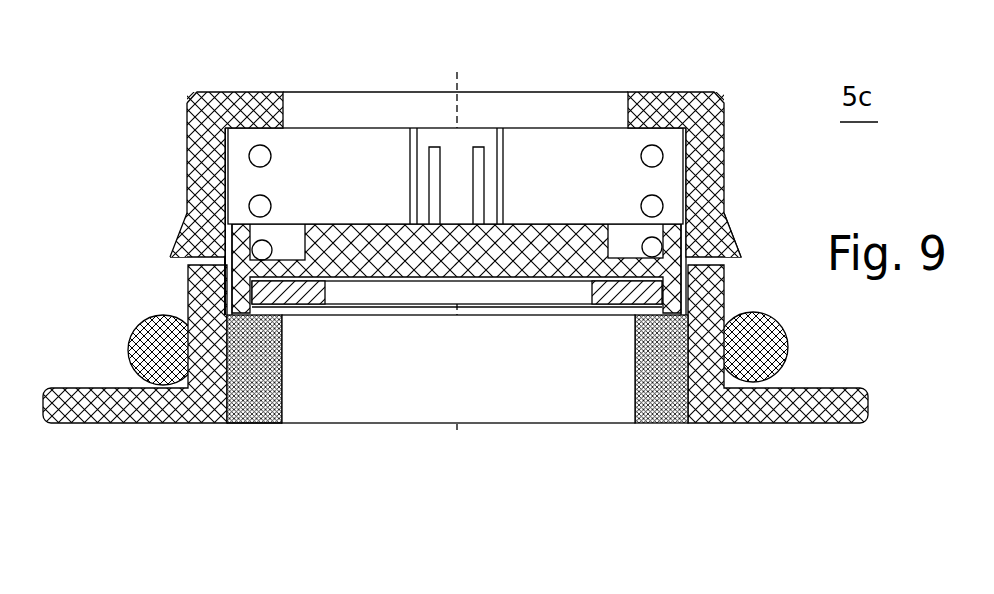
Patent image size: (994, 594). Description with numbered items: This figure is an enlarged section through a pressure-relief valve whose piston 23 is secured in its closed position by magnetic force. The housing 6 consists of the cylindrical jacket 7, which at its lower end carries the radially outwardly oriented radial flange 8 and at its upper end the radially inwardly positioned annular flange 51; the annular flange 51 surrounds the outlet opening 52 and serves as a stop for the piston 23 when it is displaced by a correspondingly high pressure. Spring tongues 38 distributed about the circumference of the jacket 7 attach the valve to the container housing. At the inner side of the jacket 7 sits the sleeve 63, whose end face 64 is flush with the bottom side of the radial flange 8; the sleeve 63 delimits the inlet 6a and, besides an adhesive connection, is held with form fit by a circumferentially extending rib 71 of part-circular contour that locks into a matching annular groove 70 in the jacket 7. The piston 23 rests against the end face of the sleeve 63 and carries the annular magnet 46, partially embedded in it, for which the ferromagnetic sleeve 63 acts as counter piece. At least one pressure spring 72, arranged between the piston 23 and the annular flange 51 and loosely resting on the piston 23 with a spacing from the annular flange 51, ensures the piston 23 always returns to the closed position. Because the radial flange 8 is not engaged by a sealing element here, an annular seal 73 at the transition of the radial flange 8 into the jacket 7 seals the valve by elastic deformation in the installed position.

The housing 6 is at (707, 155).
The inlet 6a is at (408, 402).
The cylindrical jacket 7 is at (207, 170).
The radial flange 8 is at (80, 410).
The piston 23 is at (560, 253).
The spring tongues 38 is at (195, 232).
The magnet 46 is at (302, 292).
The annular flange 51 is at (243, 113).
The outlet opening 52 is at (568, 110).
The sleeve 63 is at (278, 423).
The end face 64 is at (255, 423).
The annular groove 70 is at (227, 386).
The rib 71 is at (228, 382).
The pressure spring 72 is at (262, 155).
The annular seal 73 is at (773, 348).